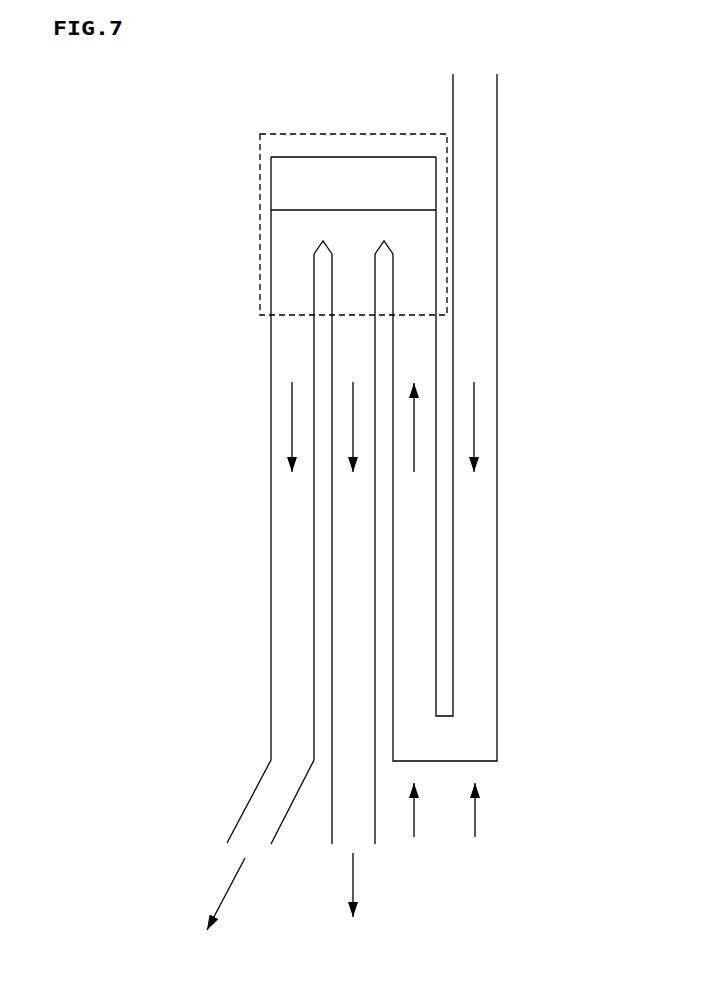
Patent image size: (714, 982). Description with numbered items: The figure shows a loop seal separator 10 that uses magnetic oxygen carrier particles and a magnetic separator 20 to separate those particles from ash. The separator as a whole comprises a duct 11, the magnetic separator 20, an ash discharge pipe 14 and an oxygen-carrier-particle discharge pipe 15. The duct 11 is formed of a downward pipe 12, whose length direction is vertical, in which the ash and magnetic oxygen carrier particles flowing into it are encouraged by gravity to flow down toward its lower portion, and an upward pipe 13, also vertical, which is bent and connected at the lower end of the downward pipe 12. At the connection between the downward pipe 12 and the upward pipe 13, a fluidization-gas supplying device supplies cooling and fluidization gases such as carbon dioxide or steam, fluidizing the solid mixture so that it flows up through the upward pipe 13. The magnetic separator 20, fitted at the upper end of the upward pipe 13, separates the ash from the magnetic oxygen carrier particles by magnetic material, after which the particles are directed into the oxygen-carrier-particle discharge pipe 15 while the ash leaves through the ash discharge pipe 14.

The loop seal separator 10 is at (609, 127).
The duct 11 is at (563, 478).
The downward pipe 12 is at (497, 485).
The upward pipe 13 is at (415, 530).
The ash discharge pipe 14 is at (348, 691).
The oxygen-carrier-particle discharge pipe 15 is at (287, 638).
The magnetic separator 20 is at (260, 225).